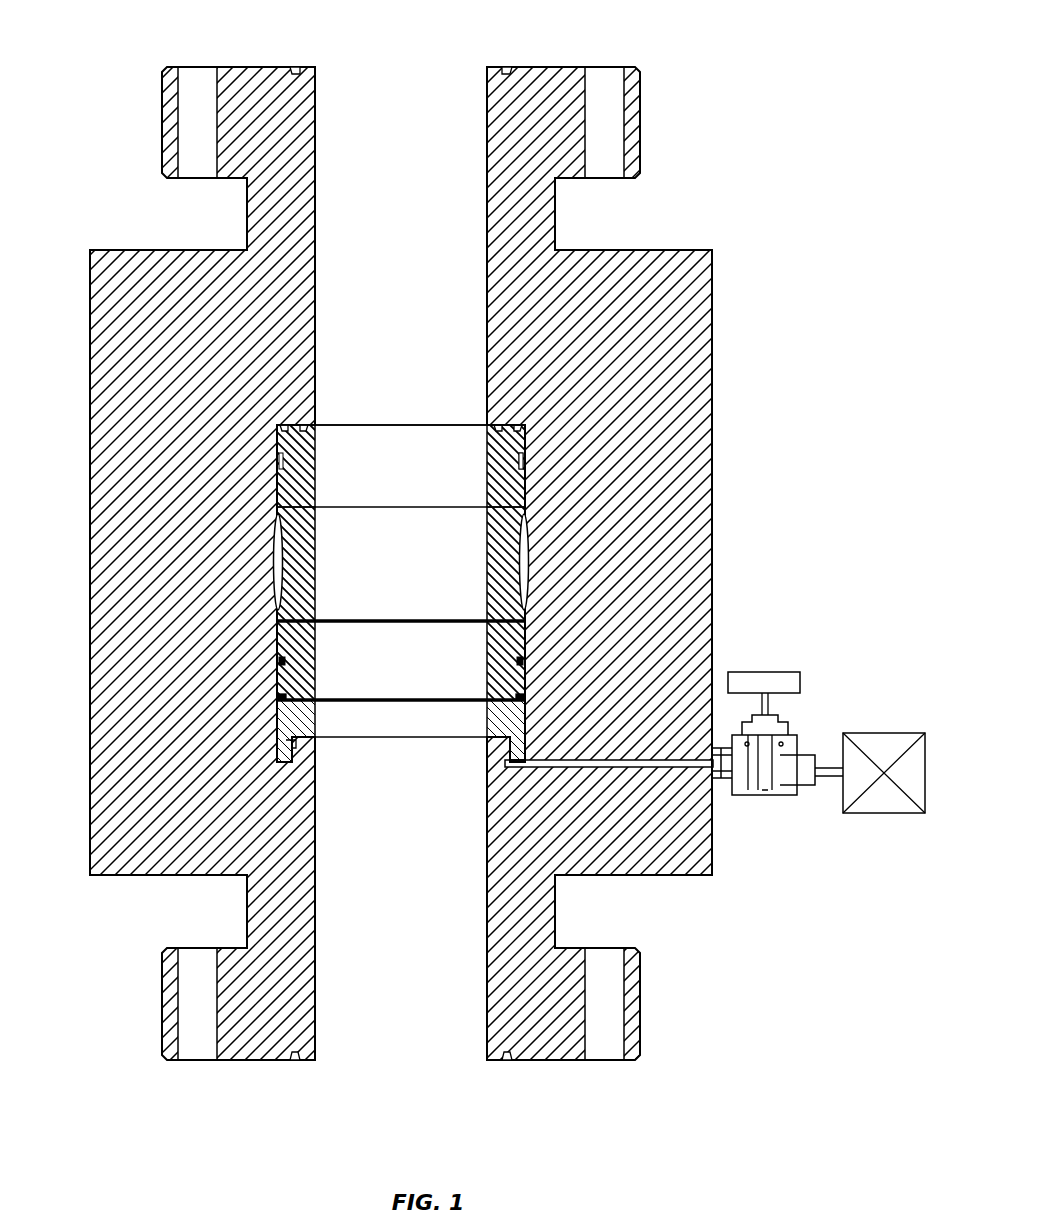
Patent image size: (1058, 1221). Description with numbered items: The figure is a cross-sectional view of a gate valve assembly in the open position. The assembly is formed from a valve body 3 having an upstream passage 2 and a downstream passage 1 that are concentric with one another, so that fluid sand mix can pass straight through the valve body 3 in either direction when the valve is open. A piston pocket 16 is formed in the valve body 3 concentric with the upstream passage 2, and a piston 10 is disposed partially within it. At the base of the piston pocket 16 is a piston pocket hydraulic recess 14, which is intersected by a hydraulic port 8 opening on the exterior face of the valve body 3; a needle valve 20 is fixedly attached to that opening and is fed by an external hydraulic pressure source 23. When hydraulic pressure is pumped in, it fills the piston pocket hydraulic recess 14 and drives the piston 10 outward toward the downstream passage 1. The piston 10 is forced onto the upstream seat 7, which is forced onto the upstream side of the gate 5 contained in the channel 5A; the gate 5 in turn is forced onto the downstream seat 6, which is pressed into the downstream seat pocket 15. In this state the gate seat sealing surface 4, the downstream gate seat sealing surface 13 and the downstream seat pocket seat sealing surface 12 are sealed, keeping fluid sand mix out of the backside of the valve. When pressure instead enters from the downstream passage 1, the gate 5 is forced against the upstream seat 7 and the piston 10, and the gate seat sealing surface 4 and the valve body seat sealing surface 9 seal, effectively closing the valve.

The downstream passage 1 is at (390, 100).
The upstream passage 2 is at (380, 1030).
The valve body 3 is at (692, 320).
The gate seat sealing surface 4 is at (357, 625).
The gate 5 is at (340, 563).
The channel 5A is at (275, 510).
The downstream seat 6 is at (348, 449).
The upstream seat 7 is at (437, 652).
The hydraulic port 8 is at (650, 768).
The valve body seat sealing surface 9 is at (395, 740).
The piston 10 is at (325, 715).
The downstream seat pocket seat sealing surface 12 is at (507, 425).
The downstream gate seat sealing surface 13 is at (506, 506).
The piston pocket hydraulic recess 14 is at (285, 760).
The downstream seat pocket 15 is at (365, 425).
The piston pocket 16 is at (277, 742).
The needle valve 20 is at (780, 796).
The hydraulic pressure source 23 is at (892, 813).